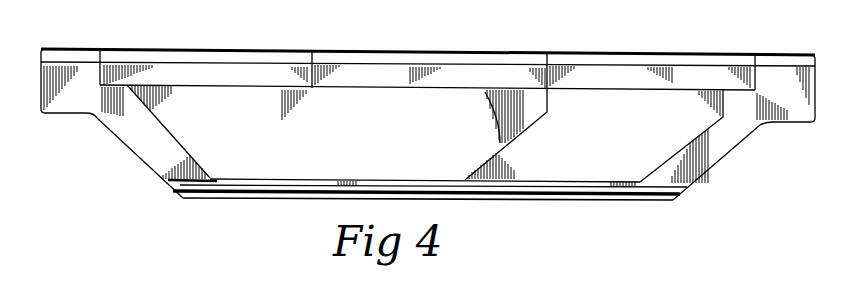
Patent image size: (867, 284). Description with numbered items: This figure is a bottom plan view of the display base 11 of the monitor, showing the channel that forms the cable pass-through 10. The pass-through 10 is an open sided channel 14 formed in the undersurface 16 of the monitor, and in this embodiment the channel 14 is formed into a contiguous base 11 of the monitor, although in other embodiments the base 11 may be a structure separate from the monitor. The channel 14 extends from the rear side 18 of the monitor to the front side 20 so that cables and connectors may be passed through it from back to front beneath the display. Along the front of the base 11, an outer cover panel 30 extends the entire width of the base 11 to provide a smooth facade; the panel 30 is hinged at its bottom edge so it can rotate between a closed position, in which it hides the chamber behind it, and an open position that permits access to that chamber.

The pass-through 10 is at (350, 140).
The base 11 is at (96, 138).
The channel 14 is at (485, 92).
The undersurface 16 is at (620, 144).
The rear side 18 is at (547, 202).
The front side 20 is at (69, 48).
The outer cover panel 30 is at (436, 50).